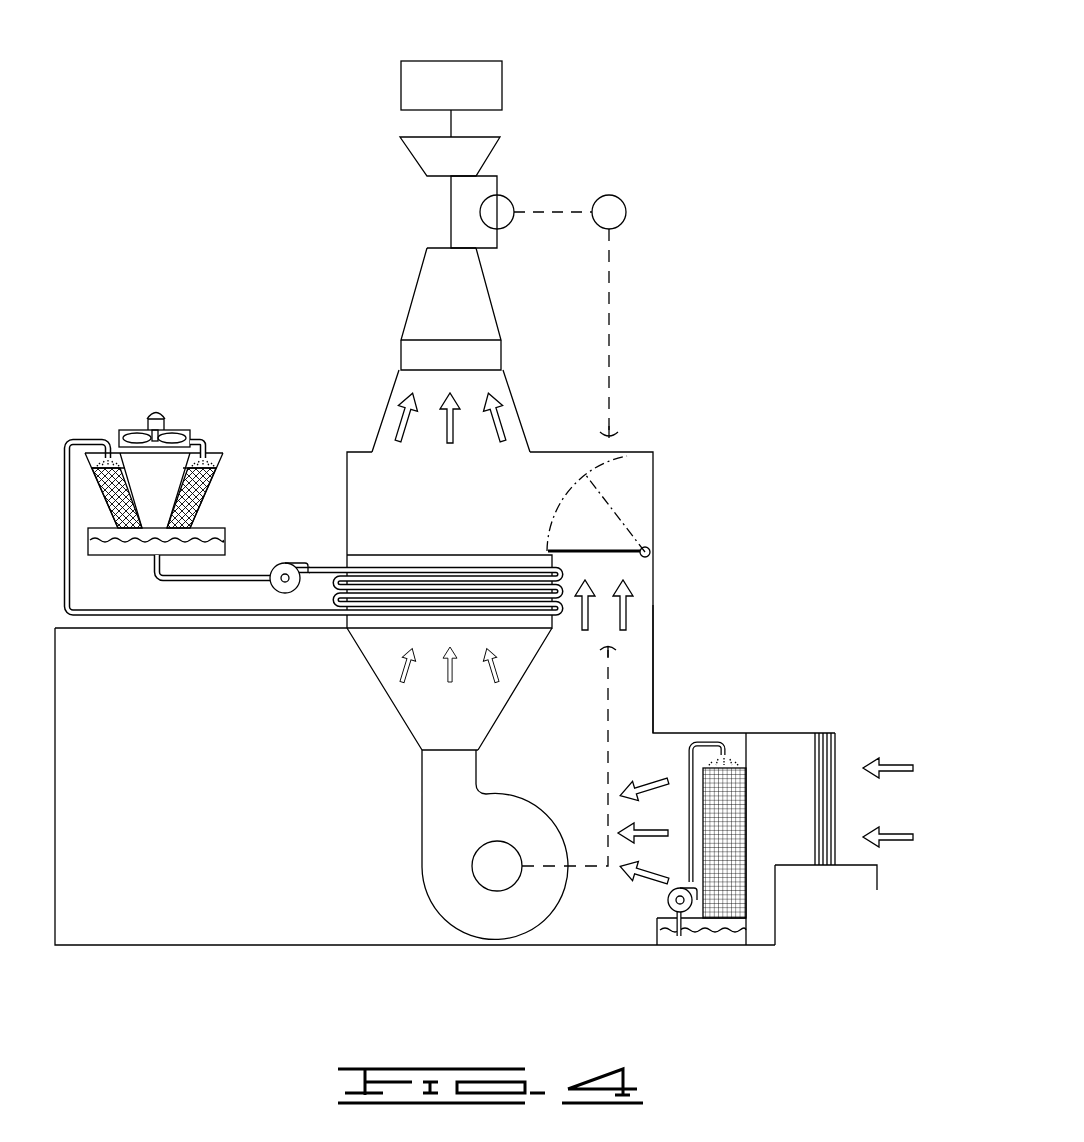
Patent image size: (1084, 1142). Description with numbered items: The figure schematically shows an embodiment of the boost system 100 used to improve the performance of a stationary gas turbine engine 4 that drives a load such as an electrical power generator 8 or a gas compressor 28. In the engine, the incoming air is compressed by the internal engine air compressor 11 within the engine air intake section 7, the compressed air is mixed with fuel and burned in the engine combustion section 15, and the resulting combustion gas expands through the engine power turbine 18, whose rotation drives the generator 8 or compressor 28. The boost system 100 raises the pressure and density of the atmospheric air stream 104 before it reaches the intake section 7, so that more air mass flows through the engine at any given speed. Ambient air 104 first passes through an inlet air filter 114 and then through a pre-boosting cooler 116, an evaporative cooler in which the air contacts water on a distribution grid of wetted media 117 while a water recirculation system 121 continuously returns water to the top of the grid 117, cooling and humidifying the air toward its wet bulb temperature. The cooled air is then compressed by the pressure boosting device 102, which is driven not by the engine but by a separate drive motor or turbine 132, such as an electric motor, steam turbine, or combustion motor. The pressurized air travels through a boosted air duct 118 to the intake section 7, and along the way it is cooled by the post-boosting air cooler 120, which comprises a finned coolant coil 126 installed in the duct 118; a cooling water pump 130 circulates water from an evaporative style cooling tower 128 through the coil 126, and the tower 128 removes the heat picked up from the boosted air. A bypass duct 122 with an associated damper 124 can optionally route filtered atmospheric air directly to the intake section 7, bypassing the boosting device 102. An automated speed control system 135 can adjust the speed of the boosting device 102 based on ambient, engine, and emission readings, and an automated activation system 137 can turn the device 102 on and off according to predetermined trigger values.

The gas turbine engine 4 is at (250, 88).
The electrical power generator 8 is at (501, 57).
The gas compressor 28 is at (484, 61).
The engine power turbine 18 is at (478, 172).
The engine combustion section 15 is at (498, 186).
The automated speed control system 135 is at (634, 304).
The automated activation system 137 is at (618, 203).
The engine air intake section 7 is at (425, 350).
The internal engine air compressor 11 is at (413, 295).
The boost system 100 is at (706, 408).
The evaporative style cooling tower 128 is at (214, 456).
The cooling water pump 130 is at (291, 565).
The post-boosting air cooler 120 is at (313, 527).
The finned coolant coil 126 is at (470, 575).
The damper 124 is at (622, 548).
The bypass duct 122 is at (655, 606).
The boosted air duct 118 is at (366, 661).
The pressure boosting device 102 is at (480, 792).
The drive motor or turbine 132 is at (483, 870).
The pre-boosting cooler 116 is at (749, 811).
The wetted media 117 is at (741, 841).
The water recirculation system 121 is at (719, 941).
The inlet air filter 114 is at (828, 858).
The atmospheric air stream 104 is at (912, 790).